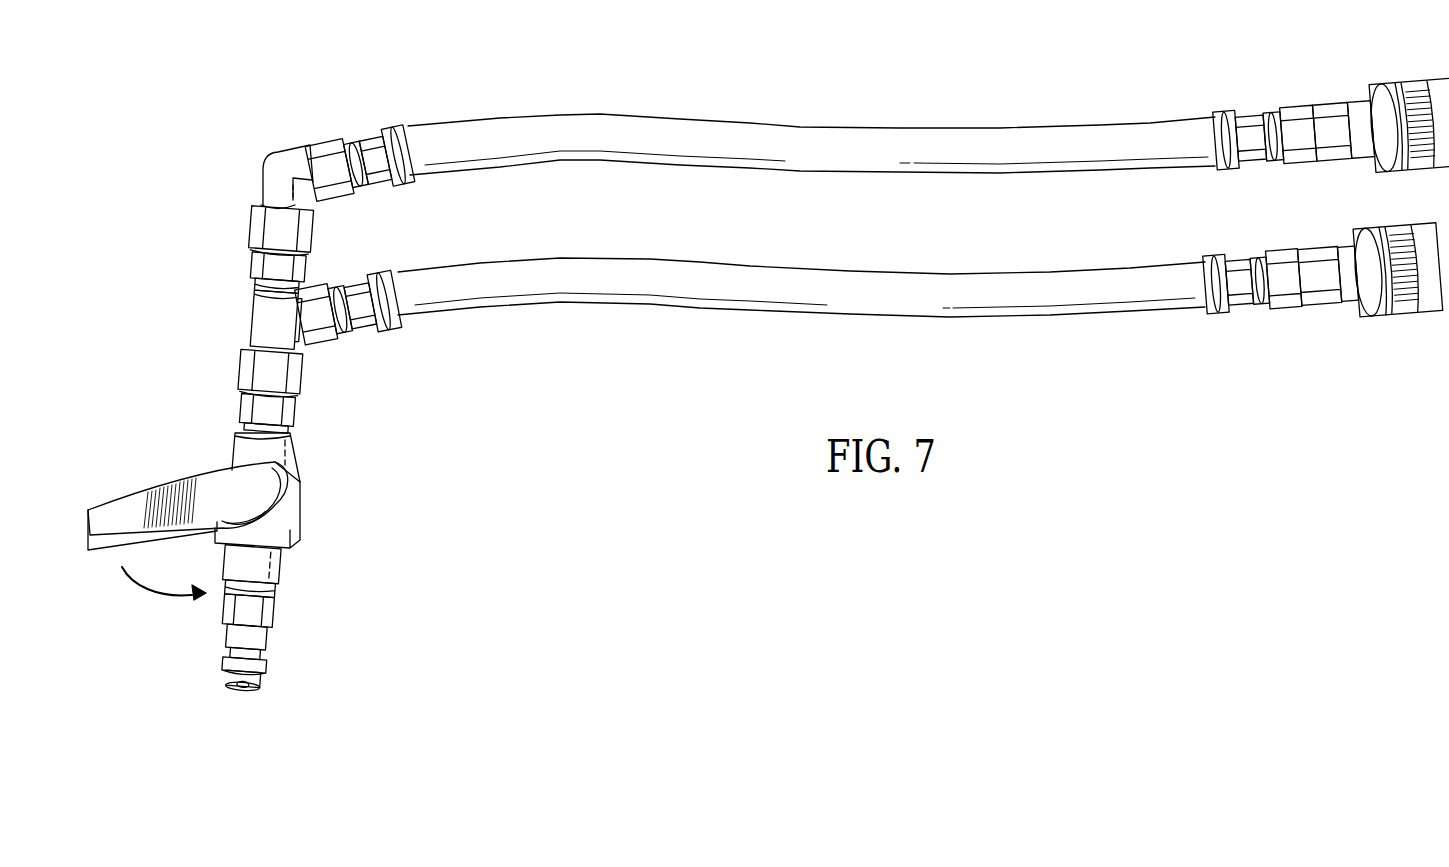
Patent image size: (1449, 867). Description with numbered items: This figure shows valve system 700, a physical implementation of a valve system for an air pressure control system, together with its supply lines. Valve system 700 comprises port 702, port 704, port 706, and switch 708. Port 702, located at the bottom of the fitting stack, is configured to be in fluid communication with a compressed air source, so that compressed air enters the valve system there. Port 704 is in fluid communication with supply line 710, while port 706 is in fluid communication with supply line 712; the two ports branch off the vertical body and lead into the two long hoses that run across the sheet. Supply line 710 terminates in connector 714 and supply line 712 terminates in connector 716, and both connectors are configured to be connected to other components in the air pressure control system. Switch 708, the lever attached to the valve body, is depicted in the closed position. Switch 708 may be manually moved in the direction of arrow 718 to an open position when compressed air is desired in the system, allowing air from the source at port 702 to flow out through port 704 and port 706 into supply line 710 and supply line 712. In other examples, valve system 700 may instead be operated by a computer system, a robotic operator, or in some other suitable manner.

The valve system 700 is at (156, 239).
The port 702 is at (245, 692).
The port 704 is at (352, 332).
The port 706 is at (330, 141).
The switch 708 is at (132, 492).
The supply line 710 is at (884, 316).
The supply line 712 is at (851, 126).
The connector 714 is at (1390, 304).
The connector 716 is at (1393, 88).
The arrow 718 is at (142, 599).